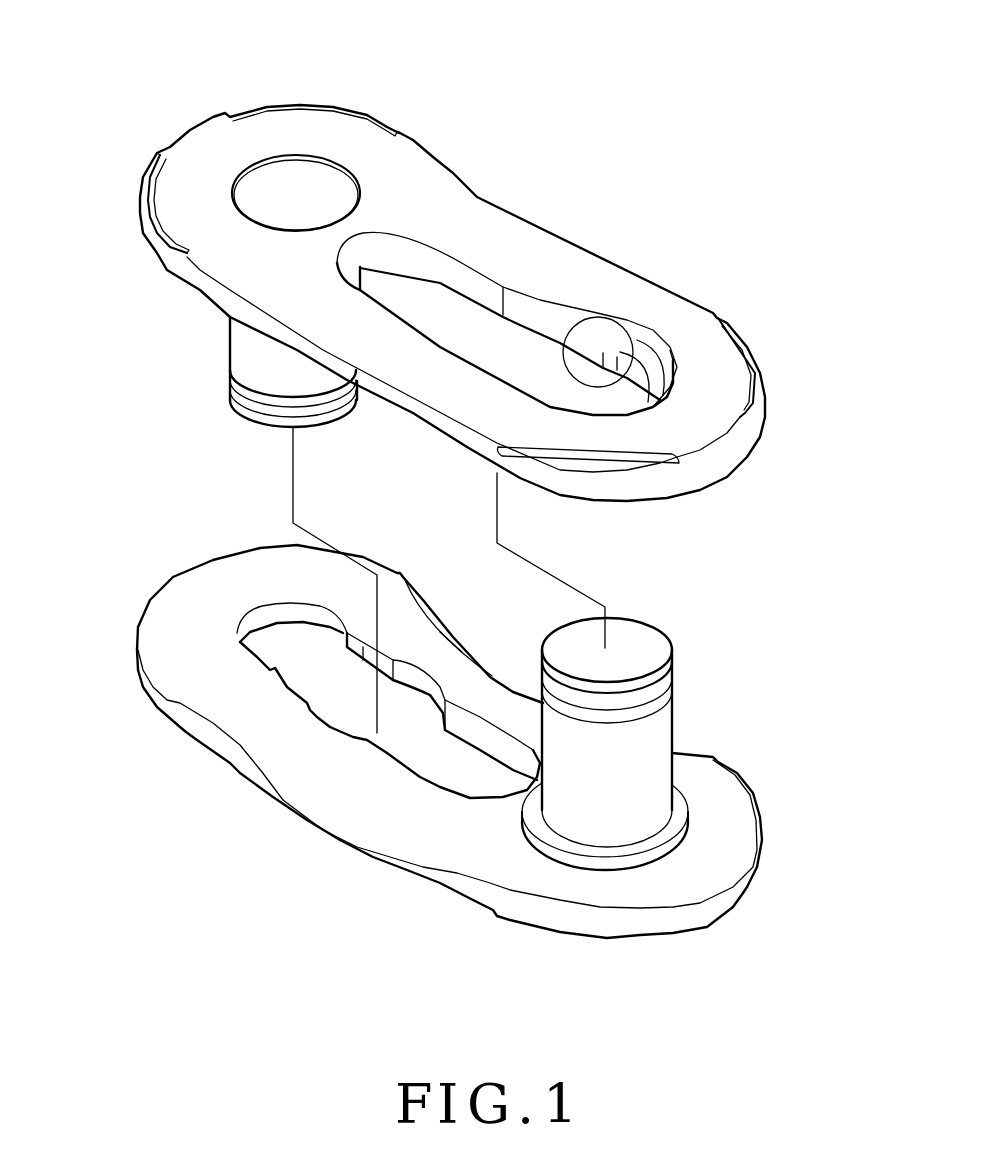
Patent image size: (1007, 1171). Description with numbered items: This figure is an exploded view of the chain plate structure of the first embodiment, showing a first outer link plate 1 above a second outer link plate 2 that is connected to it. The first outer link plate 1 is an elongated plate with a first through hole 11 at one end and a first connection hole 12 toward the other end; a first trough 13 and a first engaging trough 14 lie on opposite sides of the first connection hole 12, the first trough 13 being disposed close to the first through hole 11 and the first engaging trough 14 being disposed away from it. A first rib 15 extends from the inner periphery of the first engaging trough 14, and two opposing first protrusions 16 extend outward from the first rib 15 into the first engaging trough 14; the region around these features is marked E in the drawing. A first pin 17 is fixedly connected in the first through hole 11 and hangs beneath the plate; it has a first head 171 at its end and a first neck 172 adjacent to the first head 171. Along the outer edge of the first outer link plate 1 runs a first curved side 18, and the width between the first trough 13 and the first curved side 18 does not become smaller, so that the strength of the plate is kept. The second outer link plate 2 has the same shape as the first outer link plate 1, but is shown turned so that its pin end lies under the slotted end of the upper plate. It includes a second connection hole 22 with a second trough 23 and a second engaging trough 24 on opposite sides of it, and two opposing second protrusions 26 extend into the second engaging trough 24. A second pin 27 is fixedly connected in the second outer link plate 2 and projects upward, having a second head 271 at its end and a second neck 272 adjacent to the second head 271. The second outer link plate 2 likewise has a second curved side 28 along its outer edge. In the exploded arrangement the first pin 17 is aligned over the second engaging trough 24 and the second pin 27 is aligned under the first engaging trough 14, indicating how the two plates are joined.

The first outer link plate 1 is at (467, 203).
The first through hole 11 is at (298, 152).
The first connection hole 12 is at (514, 333).
The first trough 13 is at (390, 275).
The first engaging trough 14 is at (627, 337).
The first rib 15 is at (627, 390).
The first protrusions 16 is at (627, 337).
The first pin 17 is at (237, 337).
The first head 171 is at (262, 417).
The first neck 172 is at (270, 397).
The first curved side 18 is at (512, 228).
The enlarged region E is at (600, 318).
The second outer link plate 2 is at (350, 843).
The second connection hole 22 is at (333, 717).
The second trough 23 is at (457, 773).
The second engaging trough 24 is at (270, 640).
The second protrusions 26 is at (340, 640).
The second pin 27 is at (667, 757).
The second head 271 is at (622, 652).
The second neck 272 is at (550, 693).
The second curved side 28 is at (452, 640).